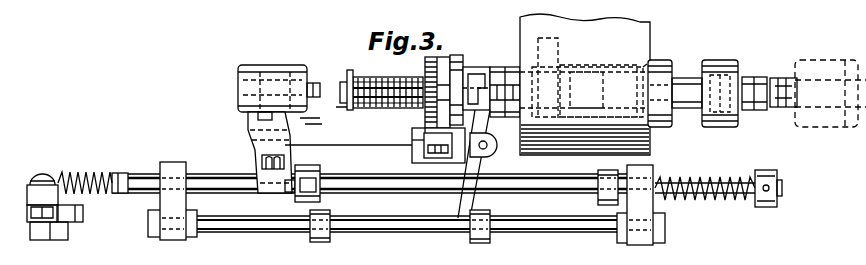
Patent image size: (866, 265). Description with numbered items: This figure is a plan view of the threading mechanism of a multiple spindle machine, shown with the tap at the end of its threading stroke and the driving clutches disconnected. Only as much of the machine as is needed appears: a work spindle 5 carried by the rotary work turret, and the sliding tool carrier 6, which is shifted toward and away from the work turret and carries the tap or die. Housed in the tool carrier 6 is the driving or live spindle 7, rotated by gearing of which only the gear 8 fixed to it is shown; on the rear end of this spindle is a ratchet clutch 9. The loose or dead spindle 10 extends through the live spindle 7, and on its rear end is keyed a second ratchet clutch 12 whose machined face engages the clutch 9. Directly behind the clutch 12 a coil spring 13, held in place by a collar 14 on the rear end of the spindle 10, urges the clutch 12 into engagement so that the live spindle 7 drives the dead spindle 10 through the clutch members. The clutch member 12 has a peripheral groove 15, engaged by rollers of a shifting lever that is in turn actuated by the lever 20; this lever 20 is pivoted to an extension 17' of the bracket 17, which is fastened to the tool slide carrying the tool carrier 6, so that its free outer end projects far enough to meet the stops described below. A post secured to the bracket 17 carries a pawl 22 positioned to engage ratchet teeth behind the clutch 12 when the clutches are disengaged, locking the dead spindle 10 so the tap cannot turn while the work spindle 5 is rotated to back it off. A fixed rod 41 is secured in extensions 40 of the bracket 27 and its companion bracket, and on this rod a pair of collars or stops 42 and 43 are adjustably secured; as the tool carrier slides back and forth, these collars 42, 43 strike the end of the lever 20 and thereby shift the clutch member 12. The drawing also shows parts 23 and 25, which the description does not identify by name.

The work spindle 5 is at (833, 121).
The sliding tool carrier 6 is at (585, 84).
The driving or live spindle 7 is at (655, 63).
The gear 8 is at (550, 48).
The ratchet clutch 9 is at (510, 68).
The loose or dead spindle 10 is at (413, 75).
The ratchet clutch 12 is at (480, 68).
The coil spring 13 is at (379, 73).
The collar 14 is at (360, 68).
The groove 15 is at (458, 56).
The bracket 17 is at (272, 80).
The extension of the bracket 17' is at (493, 164).
The lever 20 is at (470, 206).
The pawl 22 is at (431, 134).
The armature core 23 is at (313, 85).
The lever 25 is at (256, 147).
The bracket 27 is at (412, 137).
The extensions 40 is at (172, 238).
The fixed rod 41 is at (246, 232).
The collar or stop 42 is at (491, 214).
The collar or stop 43 is at (331, 214).